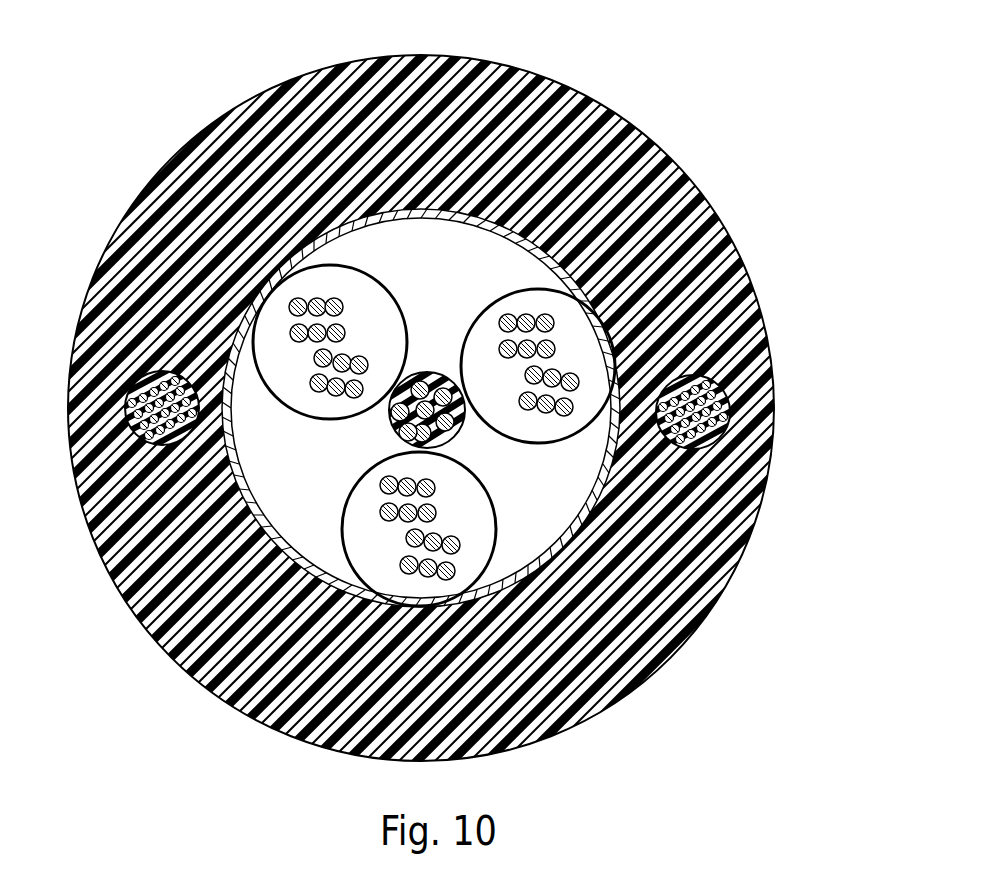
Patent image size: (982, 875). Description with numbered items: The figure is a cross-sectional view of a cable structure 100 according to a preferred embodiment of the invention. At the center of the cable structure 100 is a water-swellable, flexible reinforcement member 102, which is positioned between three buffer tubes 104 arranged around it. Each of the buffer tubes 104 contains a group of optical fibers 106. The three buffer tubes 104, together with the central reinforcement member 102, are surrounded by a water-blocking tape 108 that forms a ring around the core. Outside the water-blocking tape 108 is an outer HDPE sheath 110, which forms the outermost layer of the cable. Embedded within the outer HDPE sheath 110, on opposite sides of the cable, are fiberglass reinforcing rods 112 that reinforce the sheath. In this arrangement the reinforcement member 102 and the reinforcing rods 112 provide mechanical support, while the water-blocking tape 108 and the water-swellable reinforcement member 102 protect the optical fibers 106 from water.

The cable structure 100 is at (468, 408).
The water-swellable, flexible reinforcement member 102 is at (393, 413).
The buffer tube 104 is at (525, 371).
The optical fiber 106 is at (527, 377).
The water-blocking tape 108 is at (513, 587).
The outer HDPE sheath 110 is at (773, 342).
The fiberglass reinforcing rod 112 is at (717, 415).